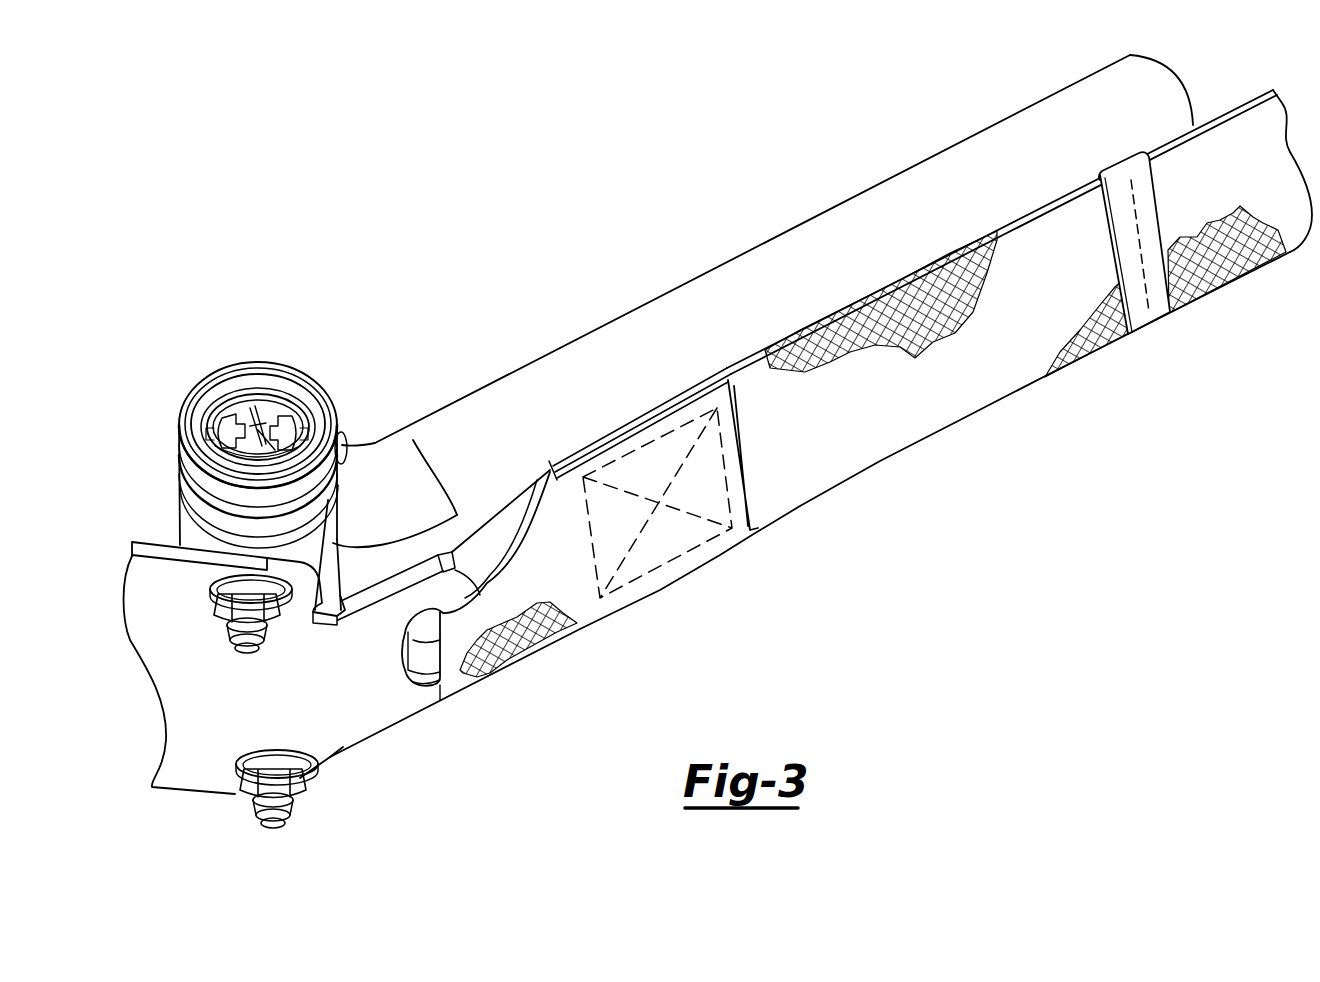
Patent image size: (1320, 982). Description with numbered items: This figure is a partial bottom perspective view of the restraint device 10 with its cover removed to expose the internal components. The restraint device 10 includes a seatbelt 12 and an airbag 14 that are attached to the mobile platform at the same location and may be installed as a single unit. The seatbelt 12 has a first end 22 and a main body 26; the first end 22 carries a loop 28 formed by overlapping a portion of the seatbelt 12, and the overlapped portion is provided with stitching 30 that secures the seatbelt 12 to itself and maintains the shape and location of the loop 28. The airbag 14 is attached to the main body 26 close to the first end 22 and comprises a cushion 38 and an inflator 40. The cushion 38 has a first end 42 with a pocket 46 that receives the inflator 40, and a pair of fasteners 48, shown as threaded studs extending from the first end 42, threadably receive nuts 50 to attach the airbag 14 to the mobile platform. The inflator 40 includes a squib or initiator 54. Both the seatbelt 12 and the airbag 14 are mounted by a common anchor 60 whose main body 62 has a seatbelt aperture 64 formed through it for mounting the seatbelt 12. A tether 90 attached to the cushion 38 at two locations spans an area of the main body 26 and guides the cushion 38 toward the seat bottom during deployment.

The restraint device 10 is at (628, 232).
The seatbelt 12 is at (896, 432).
The airbag 14 is at (363, 553).
The first end 22 is at (440, 640).
The main body 26 is at (925, 408).
The loop 28 is at (482, 565).
The stitching 30 is at (695, 545).
The cushion 38 is at (800, 262).
The inflator 40 is at (190, 470).
The first end 42 is at (198, 530).
The pocket 46 is at (340, 448).
The fasteners 48 is at (285, 810).
The nuts 50 is at (217, 607).
The initiator 54 is at (250, 408).
The anchor 60 is at (180, 708).
The main body 62 is at (337, 730).
The seatbelt aperture 64 is at (440, 672).
The tether 90 is at (1152, 213).